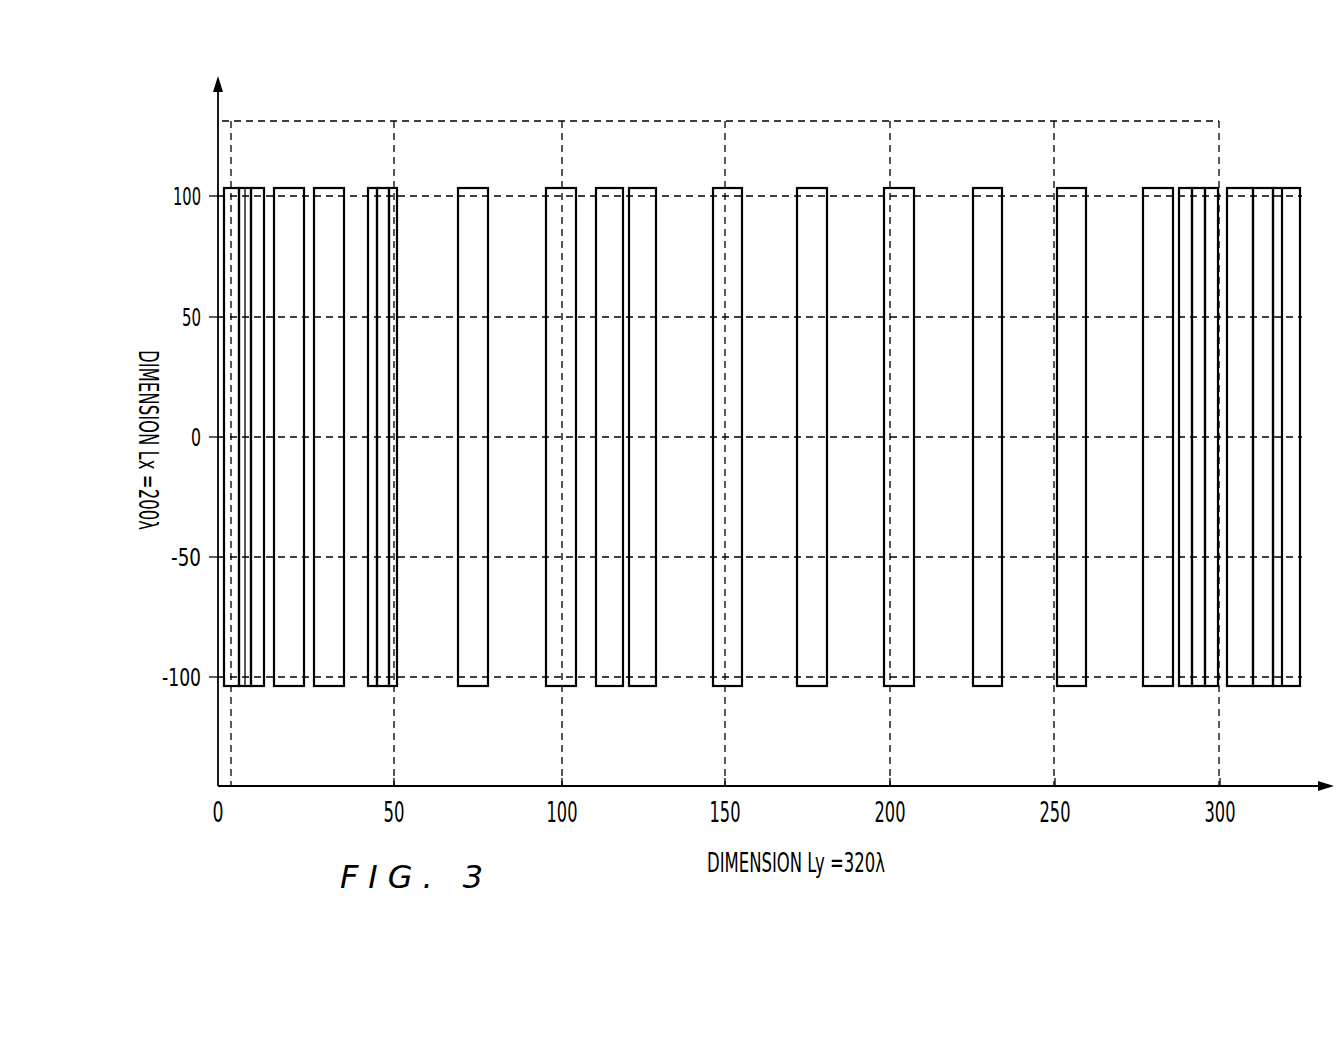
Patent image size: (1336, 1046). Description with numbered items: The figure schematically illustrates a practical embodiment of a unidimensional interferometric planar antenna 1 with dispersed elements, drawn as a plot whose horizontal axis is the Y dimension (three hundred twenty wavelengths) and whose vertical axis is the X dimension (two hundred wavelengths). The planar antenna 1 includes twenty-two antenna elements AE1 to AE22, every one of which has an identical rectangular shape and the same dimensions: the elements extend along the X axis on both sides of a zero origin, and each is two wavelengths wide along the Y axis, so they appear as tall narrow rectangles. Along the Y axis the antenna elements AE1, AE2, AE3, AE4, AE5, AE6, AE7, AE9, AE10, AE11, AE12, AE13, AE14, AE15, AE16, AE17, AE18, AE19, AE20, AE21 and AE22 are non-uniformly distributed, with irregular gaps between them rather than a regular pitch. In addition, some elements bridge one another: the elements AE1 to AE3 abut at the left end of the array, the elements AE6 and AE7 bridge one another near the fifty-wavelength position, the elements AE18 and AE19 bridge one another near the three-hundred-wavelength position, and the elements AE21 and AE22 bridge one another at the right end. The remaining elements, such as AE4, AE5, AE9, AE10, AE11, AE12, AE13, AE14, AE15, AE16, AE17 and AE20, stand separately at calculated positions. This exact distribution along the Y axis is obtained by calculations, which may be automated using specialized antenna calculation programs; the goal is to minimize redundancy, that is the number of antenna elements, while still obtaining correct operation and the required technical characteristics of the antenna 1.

The planar antenna 1 is at (1146, 106).
The antenna element AE1 is at (228, 187).
The antenna element AE2 is at (243, 188).
The antenna element AE3 is at (262, 189).
The antenna element AE4 is at (290, 687).
The antenna element AE5 is at (333, 687).
The antenna element AE6 is at (483, 722).
The antenna element AE7 is at (397, 188).
The antenna element AE9 is at (567, 188).
The antenna element AE10 is at (610, 687).
The antenna element AE11 is at (641, 188).
The antenna element AE12 is at (722, 687).
The antenna element AE13 is at (812, 188).
The antenna element AE14 is at (897, 188).
The antenna element AE15 is at (987, 687).
The antenna element AE16 is at (1072, 188).
The antenna element AE17 is at (1167, 188).
The antenna element AE18 is at (1185, 188).
The antenna element AE19 is at (1215, 188).
The antenna element AE20 is at (1238, 687).
The antenna element AE21 is at (1262, 687).
The antenna element AE22 is at (1293, 687).